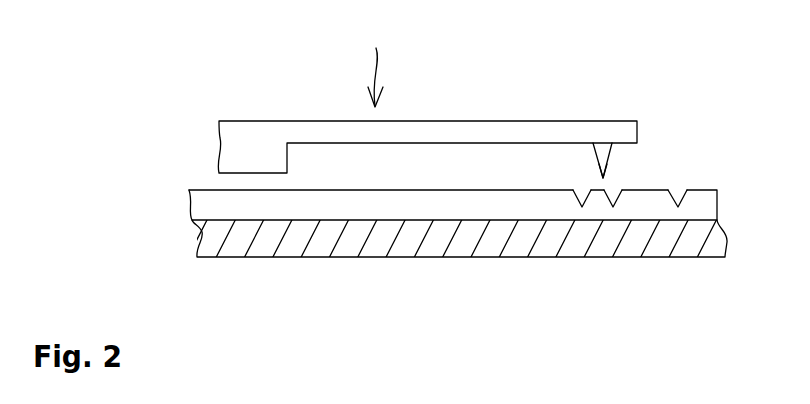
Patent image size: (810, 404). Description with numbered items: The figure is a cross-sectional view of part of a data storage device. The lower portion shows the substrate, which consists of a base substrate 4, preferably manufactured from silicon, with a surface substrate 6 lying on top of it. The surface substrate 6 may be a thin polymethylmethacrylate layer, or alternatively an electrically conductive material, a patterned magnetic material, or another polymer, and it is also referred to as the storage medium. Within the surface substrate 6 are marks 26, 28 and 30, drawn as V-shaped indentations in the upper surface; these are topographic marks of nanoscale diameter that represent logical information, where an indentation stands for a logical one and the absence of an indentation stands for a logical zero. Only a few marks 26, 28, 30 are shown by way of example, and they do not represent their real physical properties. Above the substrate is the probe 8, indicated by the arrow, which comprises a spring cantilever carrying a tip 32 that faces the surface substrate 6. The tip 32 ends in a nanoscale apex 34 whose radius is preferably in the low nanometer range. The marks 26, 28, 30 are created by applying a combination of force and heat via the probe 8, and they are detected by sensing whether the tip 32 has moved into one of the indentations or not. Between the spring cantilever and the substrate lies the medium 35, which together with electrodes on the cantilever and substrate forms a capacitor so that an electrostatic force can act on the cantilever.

The base substrate 4 is at (205, 240).
The surface substrate 6 is at (207, 212).
The probe 8 is at (375, 63).
The mark 26 is at (582, 206).
The mark 28 is at (612, 206).
The mark 30 is at (680, 205).
The tip 32 is at (613, 153).
The apex 34 is at (603, 178).
The medium 35 is at (507, 163).